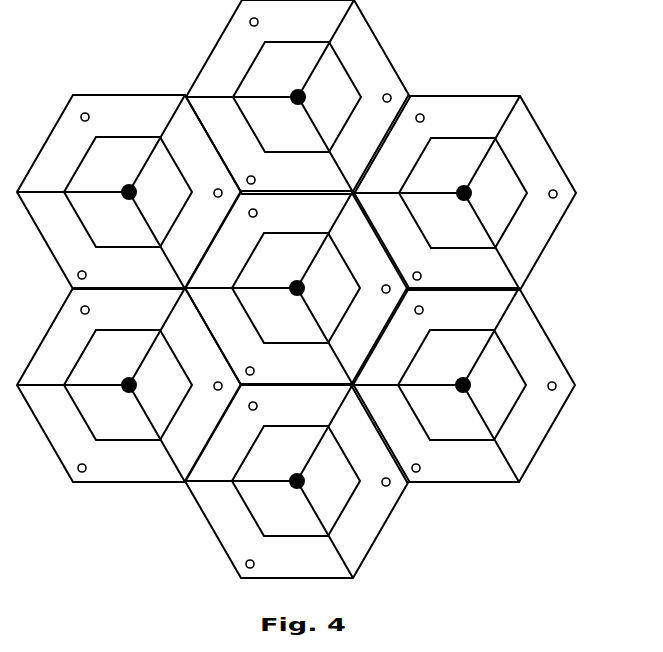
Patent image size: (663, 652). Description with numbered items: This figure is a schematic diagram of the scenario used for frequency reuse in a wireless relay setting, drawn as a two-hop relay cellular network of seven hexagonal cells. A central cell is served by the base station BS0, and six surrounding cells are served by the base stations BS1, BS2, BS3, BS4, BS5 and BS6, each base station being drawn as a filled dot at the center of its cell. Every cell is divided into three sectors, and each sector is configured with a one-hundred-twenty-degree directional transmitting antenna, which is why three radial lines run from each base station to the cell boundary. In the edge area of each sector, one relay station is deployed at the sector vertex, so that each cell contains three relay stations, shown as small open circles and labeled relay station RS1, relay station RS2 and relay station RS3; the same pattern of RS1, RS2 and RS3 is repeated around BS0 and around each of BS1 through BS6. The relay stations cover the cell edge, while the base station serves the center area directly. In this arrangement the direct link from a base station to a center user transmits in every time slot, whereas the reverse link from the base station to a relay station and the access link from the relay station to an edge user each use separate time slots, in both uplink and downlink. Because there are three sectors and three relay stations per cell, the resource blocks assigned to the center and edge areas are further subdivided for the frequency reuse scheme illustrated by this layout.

The base station BS0 is at (297, 288).
The base station BS1 is at (464, 193).
The base station BS2 is at (298, 97).
The base station BS3 is at (129, 192).
The base station BS4 is at (129, 385).
The base station BS5 is at (297, 481).
The base station BS6 is at (463, 385).
The relay station RS1 is at (258, 227).
The relay station RS2 is at (271, 375).
The relay station RS3 is at (378, 303).